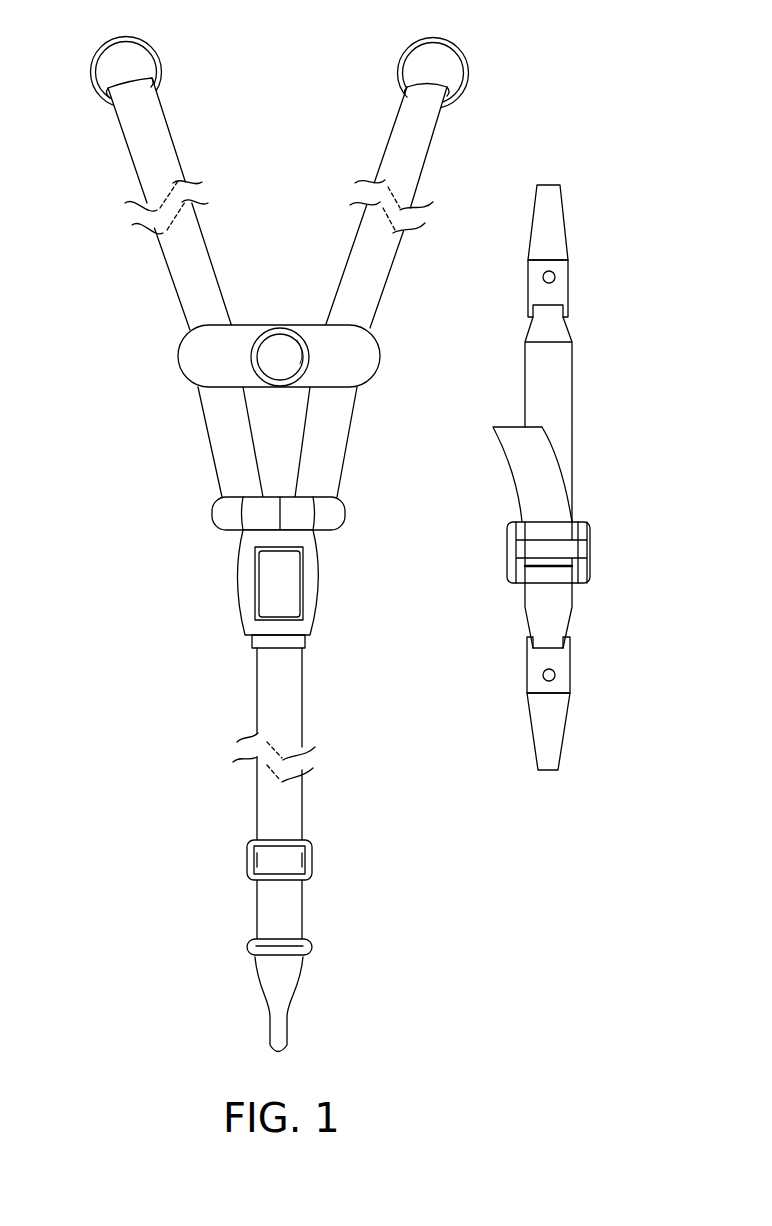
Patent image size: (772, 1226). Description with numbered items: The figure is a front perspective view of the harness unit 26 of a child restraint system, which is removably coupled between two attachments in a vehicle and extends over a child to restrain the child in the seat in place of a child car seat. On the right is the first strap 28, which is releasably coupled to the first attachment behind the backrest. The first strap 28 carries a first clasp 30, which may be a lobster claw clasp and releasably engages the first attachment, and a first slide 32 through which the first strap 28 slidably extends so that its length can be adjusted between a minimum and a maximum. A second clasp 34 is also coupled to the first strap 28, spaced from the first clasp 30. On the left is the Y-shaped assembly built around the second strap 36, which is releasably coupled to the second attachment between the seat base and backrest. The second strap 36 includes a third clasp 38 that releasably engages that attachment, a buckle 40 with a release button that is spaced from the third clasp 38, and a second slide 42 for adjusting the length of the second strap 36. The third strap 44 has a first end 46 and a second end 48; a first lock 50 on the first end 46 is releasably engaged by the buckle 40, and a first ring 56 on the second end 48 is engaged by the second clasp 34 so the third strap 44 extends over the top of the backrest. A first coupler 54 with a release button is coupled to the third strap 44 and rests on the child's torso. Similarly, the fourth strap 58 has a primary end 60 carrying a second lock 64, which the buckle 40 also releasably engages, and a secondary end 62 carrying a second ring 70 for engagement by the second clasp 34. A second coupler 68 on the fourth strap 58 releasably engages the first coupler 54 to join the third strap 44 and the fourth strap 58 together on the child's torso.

The harness unit 26 is at (268, 528).
The first strap 28 is at (573, 400).
The first clasp 30 is at (570, 710).
The first slide 32 is at (592, 542).
The second clasp 34 is at (570, 280).
The second strap 36 is at (257, 678).
The third clasp 38 is at (292, 995).
The buckle 40 is at (318, 580).
The second slide 42 is at (312, 853).
The third strap 44 is at (170, 274).
The first end 46 is at (243, 530).
The second end 48 is at (97, 70).
The first lock 50 is at (213, 512).
The first coupler 54 is at (190, 357).
The first ring 56 is at (157, 60).
The fourth strap 58 is at (352, 421).
The primary end 60 is at (320, 532).
The secondary end 62 is at (408, 68).
The second lock 64 is at (340, 505).
The second coupler 68 is at (380, 357).
The second ring 70 is at (463, 62).